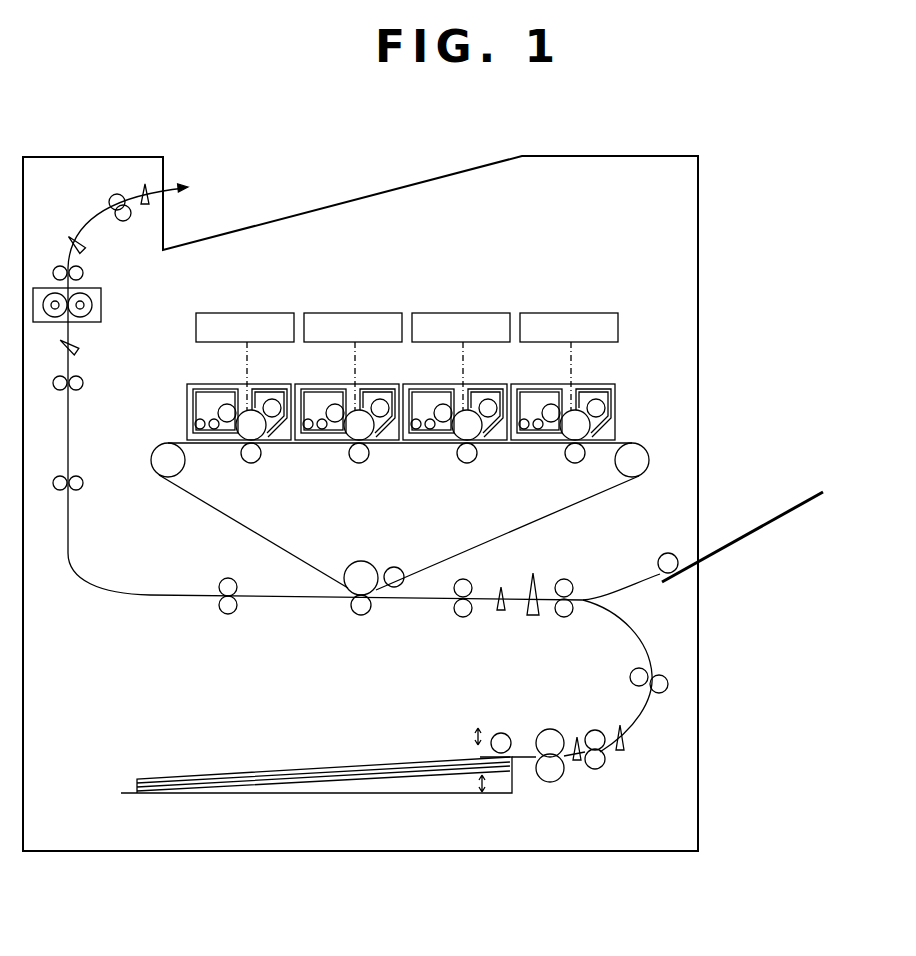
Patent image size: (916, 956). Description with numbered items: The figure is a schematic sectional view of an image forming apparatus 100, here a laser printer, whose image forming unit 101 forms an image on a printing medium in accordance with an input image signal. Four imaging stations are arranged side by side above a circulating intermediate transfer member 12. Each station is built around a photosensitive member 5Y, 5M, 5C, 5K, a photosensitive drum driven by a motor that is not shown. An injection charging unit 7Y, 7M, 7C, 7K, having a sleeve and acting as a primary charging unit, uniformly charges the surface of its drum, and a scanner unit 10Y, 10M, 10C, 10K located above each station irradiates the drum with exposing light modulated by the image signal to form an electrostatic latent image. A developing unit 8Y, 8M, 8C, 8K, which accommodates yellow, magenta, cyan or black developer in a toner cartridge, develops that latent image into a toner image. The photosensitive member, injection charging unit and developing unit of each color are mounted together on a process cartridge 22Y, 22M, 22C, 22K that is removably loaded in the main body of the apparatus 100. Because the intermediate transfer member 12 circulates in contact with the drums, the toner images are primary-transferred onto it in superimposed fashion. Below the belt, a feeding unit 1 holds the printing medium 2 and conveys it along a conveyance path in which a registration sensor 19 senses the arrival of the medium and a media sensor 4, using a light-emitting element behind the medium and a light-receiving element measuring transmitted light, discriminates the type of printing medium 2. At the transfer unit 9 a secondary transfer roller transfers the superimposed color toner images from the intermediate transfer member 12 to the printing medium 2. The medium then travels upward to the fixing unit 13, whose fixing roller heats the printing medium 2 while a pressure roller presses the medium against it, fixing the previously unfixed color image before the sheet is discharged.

The image forming apparatus 100 is at (725, 82).
The image forming unit 101 is at (822, 276).
The fixing unit 13 is at (101, 305).
The scanner unit 10Y is at (244, 313).
The scanner unit 10M is at (352, 313).
The scanner unit 10C is at (460, 313).
The scanner unit 10K is at (568, 313).
The developing unit 8Y is at (211, 392).
The developing unit 8M is at (319, 392).
The developing unit 8C is at (427, 392).
The developing unit 8K is at (535, 392).
The photosensitive member 5Y is at (260, 409).
The photosensitive member 5M is at (368, 409).
The photosensitive member 5C is at (476, 409).
The photosensitive member 5K is at (584, 409).
The injection charging unit 7Y is at (286, 443).
The injection charging unit 7M is at (394, 443).
The injection charging unit 7C is at (502, 443).
The injection charging unit 7K is at (613, 399).
The process cartridge 22Y is at (212, 441).
The process cartridge 22M is at (320, 441).
The process cartridge 22C is at (428, 441).
The process cartridge 22K is at (536, 441).
The intermediate transfer member 12 is at (448, 562).
The transfer unit 9 is at (362, 617).
The media sensor 4 is at (502, 612).
The registration sensor 19 is at (533, 617).
The printing medium 2 is at (367, 765).
The feeding unit 1 is at (332, 797).